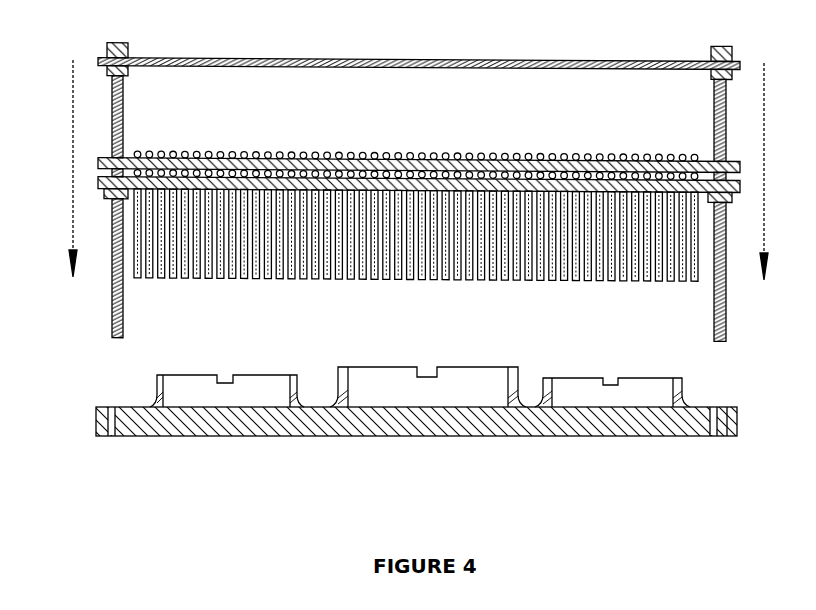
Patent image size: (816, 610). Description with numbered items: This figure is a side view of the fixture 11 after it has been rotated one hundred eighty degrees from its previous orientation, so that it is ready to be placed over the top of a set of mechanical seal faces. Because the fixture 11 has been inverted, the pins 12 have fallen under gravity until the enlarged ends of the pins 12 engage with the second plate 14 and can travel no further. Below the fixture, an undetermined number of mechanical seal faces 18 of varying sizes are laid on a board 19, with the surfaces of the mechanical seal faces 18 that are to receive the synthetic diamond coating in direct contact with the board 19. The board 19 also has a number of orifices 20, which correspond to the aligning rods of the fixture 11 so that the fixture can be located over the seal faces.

The fixture 11 is at (418, 59).
The pins 12 is at (136, 277).
The second plate 14 is at (98, 160).
The mechanical seal faces 18 is at (228, 383).
The board 19 is at (665, 436).
The orifices 20 is at (118, 436).